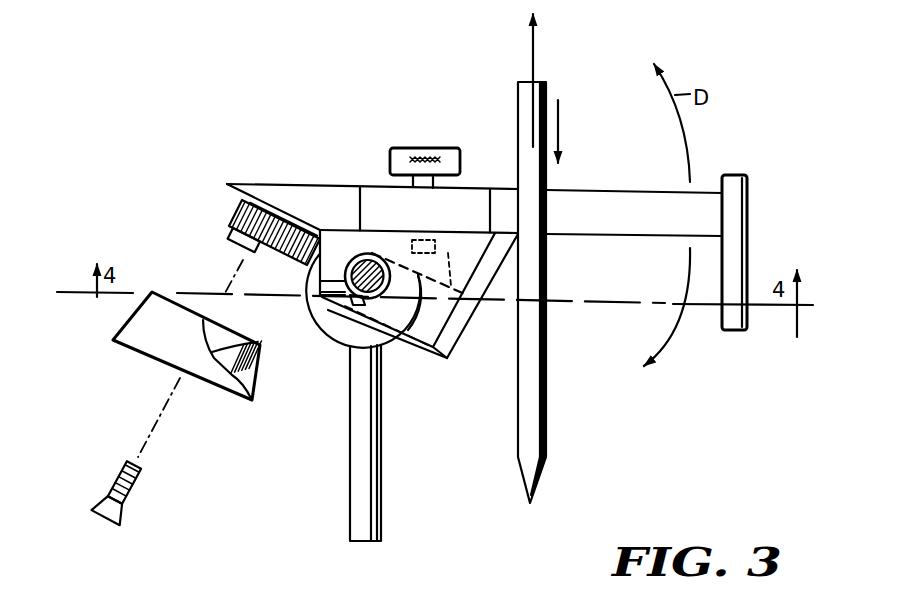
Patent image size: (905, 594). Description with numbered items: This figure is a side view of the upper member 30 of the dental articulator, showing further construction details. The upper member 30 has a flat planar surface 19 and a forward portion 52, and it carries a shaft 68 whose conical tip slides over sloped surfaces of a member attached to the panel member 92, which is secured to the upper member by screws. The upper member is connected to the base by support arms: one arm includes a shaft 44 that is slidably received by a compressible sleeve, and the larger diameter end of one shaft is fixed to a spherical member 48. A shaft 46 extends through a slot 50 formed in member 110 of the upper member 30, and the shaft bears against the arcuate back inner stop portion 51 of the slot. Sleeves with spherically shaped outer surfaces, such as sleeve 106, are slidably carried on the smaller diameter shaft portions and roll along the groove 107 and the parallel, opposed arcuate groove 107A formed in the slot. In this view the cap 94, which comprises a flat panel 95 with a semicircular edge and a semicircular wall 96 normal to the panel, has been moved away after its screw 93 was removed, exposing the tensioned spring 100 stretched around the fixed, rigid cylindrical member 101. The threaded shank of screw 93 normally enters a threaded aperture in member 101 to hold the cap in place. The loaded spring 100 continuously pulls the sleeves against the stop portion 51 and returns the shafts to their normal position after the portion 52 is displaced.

The upper member 30 is at (366, 165).
The flat planar surface 19 is at (660, 192).
The portion 52 is at (755, 227).
The shaft 68 is at (518, 120).
The member 110 is at (345, 245).
The cylindrical member 101 is at (272, 200).
The spring 100 is at (248, 212).
The back inner stop portion 51 is at (345, 277).
The shaft 46 is at (322, 283).
The spherical member 48 is at (330, 325).
The shaft 44 is at (362, 543).
The sleeve 106 is at (410, 343).
The slot 50 is at (390, 250).
The groove 107 is at (420, 360).
The arcuate groove 107A is at (448, 263).
The panel member 92 is at (408, 330).
The cap 94 is at (144, 416).
The flat panel 95 is at (222, 390).
The semicircular wall 96 is at (163, 338).
The screw 93 is at (120, 527).